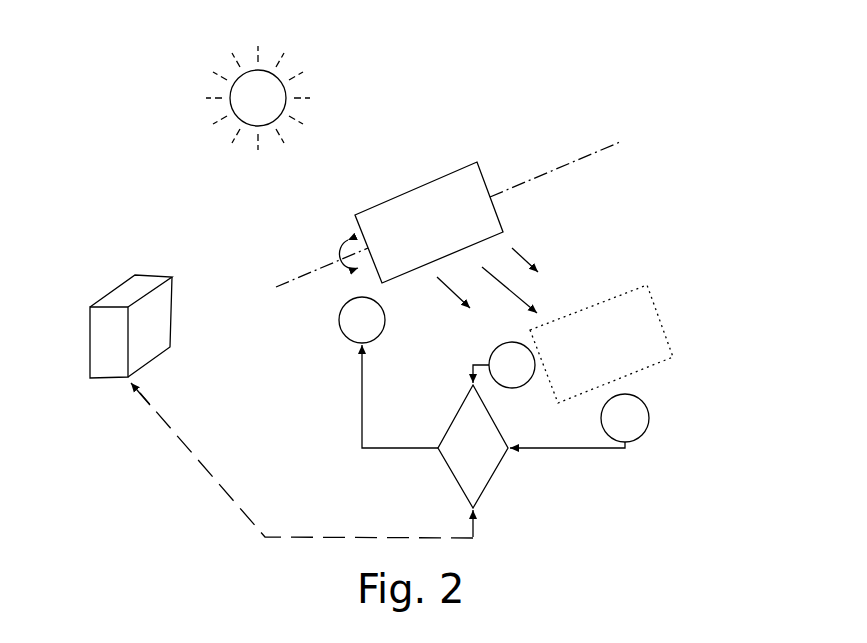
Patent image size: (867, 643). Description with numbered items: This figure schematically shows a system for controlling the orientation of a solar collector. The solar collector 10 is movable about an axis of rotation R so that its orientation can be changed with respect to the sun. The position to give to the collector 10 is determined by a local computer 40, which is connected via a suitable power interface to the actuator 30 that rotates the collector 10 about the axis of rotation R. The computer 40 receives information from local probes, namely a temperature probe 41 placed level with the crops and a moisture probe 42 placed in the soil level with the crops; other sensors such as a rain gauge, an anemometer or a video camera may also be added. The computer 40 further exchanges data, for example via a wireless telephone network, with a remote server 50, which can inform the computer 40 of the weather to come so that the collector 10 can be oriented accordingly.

The solar collector 10 is at (422, 198).
The axis of rotation R is at (280, 292).
The actuator 30 is at (352, 337).
The local computer 40 is at (490, 468).
The temperature probe 41 is at (648, 417).
The moisture probe 42 is at (488, 350).
The remote server 50 is at (168, 320).